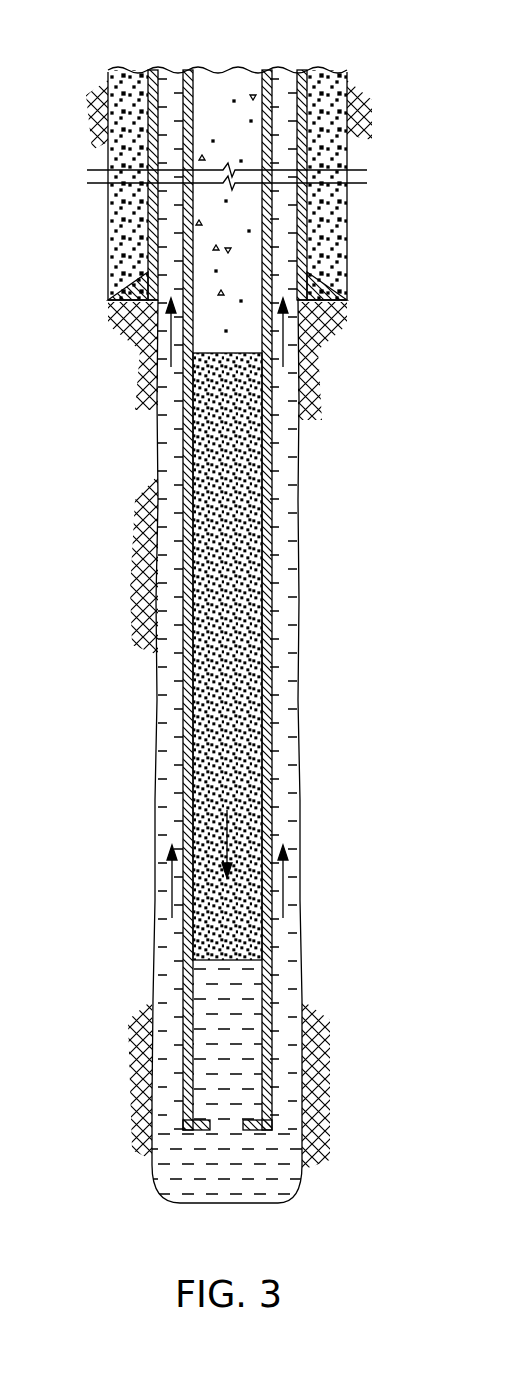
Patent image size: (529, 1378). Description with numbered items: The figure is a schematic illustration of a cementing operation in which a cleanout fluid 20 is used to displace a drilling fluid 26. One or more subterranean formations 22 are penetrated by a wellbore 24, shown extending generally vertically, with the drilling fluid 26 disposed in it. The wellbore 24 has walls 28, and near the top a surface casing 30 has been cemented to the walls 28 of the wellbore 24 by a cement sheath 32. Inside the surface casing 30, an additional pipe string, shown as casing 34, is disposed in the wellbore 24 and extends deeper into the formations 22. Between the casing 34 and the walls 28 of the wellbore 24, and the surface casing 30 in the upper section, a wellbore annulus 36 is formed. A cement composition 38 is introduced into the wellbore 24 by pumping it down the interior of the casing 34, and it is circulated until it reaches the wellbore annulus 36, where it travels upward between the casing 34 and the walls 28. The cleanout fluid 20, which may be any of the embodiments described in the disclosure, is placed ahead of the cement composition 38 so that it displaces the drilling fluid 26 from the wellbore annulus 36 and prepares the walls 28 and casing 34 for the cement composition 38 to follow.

The cleanout fluid 20 is at (227, 397).
The subterranean formation 22 is at (73, 572).
The wellbore 24 is at (305, 508).
The drilling fluid 26 is at (165, 780).
The walls 28 is at (117, 270).
The surface casing 30 is at (148, 123).
The cement sheath 32 is at (130, 248).
The casing 34 is at (183, 707).
The wellbore annulus 36 is at (168, 732).
The cement composition 38 is at (229, 80).